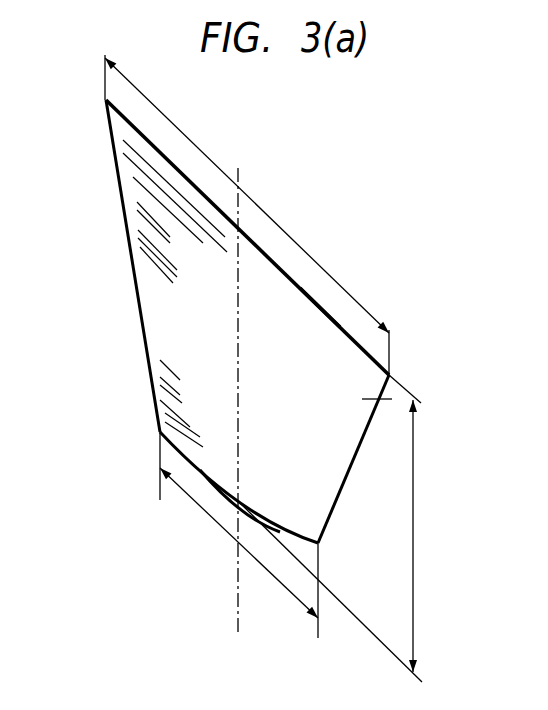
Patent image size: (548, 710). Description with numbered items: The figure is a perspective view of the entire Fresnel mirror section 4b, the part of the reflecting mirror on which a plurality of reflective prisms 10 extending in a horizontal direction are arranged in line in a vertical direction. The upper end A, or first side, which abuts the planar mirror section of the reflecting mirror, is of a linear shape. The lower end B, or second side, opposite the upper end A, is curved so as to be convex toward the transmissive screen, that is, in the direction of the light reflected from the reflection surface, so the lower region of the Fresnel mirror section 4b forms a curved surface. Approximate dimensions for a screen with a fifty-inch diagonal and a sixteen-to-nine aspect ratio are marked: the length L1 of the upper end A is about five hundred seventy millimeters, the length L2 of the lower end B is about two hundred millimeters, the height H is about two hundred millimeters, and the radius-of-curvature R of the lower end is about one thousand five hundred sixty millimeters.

The reflective prisms 10 is at (132, 165).
The Fresnel mirror section 4b is at (380, 399).
The length of the upper end L1 is at (247, 215).
The length of the lower end L2 is at (239, 535).
The upper end A is at (318, 306).
The radius-of-curvature of the lower end R is at (246, 496).
The height H is at (423, 536).
The lower end B is at (306, 547).